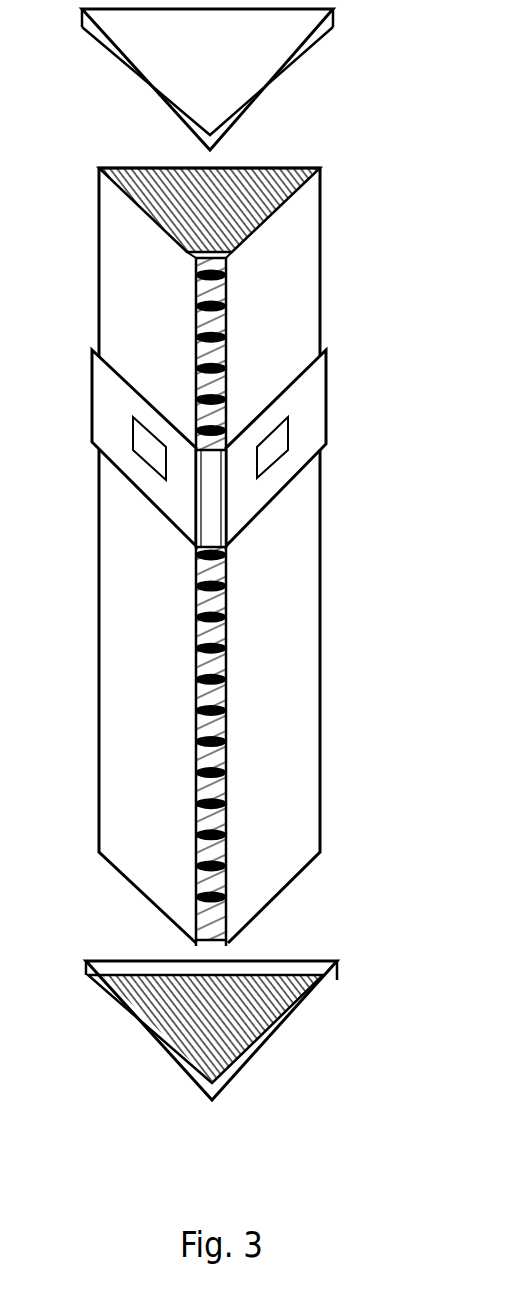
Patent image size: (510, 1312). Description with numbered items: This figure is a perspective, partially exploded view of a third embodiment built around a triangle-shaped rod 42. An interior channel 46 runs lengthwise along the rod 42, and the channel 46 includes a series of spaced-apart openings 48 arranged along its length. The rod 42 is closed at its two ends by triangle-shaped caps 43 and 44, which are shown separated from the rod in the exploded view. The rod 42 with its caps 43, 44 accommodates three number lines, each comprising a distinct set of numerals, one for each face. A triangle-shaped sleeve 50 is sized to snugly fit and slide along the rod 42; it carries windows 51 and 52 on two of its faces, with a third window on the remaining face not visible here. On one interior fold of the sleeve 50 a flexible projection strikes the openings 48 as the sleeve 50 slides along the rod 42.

The triangle-shaped rod 42 is at (322, 665).
The triangle-shaped cap 43 is at (283, 73).
The triangle-shaped cap 44 is at (280, 1037).
The interior channel 46 is at (226, 262).
The spaced-apart openings 48 is at (226, 838).
The triangle-shaped sleeve 50 is at (329, 404).
The window 51 is at (135, 441).
The window 52 is at (283, 453).